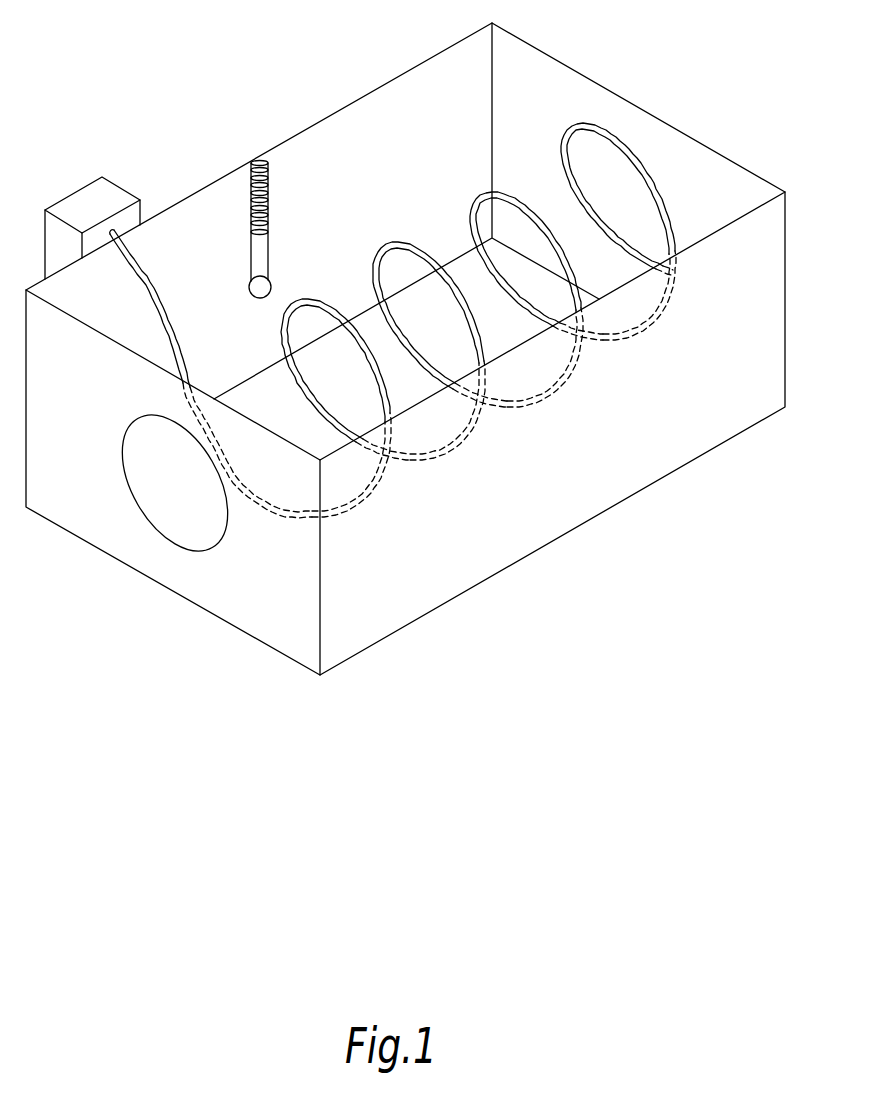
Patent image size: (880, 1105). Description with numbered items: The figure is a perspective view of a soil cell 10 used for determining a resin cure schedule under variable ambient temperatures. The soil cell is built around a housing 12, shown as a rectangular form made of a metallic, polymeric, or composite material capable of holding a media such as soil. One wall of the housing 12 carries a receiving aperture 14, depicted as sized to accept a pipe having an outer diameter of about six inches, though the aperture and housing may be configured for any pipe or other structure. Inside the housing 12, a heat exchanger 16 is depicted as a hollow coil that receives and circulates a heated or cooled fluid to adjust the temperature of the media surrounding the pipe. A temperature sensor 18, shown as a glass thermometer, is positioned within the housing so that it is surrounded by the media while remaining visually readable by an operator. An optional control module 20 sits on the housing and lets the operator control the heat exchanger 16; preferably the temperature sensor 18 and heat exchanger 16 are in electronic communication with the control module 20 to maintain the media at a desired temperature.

The soil cell 10 is at (663, 57).
The housing 12 is at (765, 277).
The receiving aperture 14 is at (143, 480).
The heat exchanger 16 is at (653, 198).
The temperature sensor 18 is at (257, 163).
The control module 20 is at (85, 200).